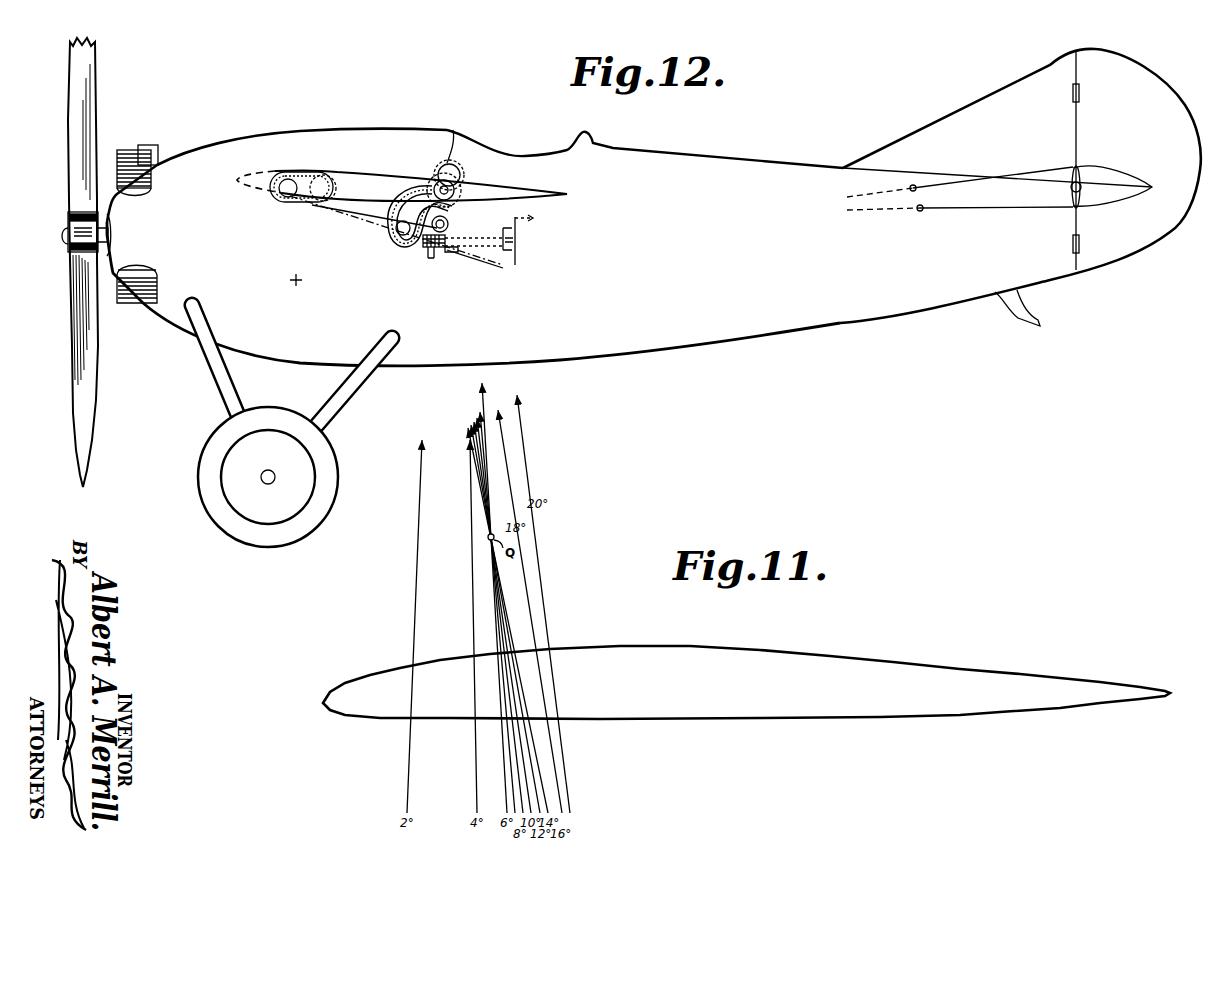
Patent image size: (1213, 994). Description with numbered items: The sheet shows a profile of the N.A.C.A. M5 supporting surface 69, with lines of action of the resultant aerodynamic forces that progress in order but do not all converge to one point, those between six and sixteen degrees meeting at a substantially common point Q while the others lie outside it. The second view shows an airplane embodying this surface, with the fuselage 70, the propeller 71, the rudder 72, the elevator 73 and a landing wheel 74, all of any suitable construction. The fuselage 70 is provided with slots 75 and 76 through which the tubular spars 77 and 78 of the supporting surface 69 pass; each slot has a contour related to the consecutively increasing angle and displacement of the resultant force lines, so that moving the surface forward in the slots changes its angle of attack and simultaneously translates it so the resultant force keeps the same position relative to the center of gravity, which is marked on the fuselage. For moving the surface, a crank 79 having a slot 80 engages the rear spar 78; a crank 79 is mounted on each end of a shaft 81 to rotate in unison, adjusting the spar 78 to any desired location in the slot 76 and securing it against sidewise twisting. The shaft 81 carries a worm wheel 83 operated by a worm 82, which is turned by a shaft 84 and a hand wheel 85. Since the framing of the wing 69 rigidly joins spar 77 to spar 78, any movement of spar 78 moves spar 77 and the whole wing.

In FIG. 12, the supporting surface 69 is at (535, 199).
In FIG. 11, the supporting surface 69 is at (1052, 685).
In FIG. 12, the fuselage 70 is at (716, 160).
In FIG. 12, the propeller 71 is at (95, 379).
In FIG. 12, the rudder 72 is at (1112, 260).
In FIG. 12, the elevator 73 is at (1126, 186).
In FIG. 12, the landing wheel 74 is at (204, 462).
In FIG. 12, the slot 75 is at (292, 173).
In FIG. 12, the slot 76 is at (398, 240).
In FIG. 12, the tubular spar 77 is at (331, 178).
In FIG. 12, the tubular spar 78 is at (434, 182).
In FIG. 12, the crank 79 is at (456, 171).
In FIG. 12, the slot 80 is at (447, 163).
In FIG. 12, the shaft 81 is at (449, 225).
In FIG. 12, the worm 82 is at (431, 254).
In FIG. 12, the worm wheel 83 is at (446, 239).
In FIG. 12, the shaft 84 is at (456, 256).
In FIG. 12, the hand wheel 85 is at (519, 246).